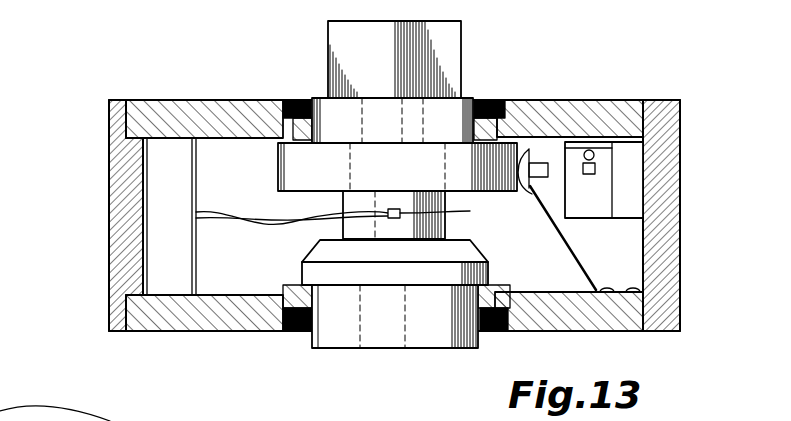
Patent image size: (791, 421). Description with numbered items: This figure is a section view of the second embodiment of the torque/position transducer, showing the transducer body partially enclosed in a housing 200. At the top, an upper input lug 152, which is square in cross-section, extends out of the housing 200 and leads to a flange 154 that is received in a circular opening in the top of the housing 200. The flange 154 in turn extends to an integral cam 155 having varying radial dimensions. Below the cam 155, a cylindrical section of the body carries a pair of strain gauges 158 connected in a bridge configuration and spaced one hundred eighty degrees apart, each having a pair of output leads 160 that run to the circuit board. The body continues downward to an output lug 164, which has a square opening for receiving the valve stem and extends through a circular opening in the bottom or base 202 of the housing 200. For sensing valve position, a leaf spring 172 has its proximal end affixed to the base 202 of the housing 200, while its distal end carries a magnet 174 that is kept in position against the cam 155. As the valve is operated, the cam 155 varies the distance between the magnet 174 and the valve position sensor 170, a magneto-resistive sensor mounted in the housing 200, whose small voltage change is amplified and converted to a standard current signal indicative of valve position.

The upper input lug 152 is at (447, 47).
The flange 154 is at (463, 95).
The cam 155 is at (283, 165).
The strain gauges 158 is at (468, 212).
The output leads 160 is at (262, 224).
The output lug 164 is at (416, 326).
The valve position sensor 170 is at (627, 155).
The leaf spring 172 is at (563, 234).
The magnet 174 is at (548, 192).
The housing 200 is at (109, 204).
The base of housing 202 is at (603, 331).